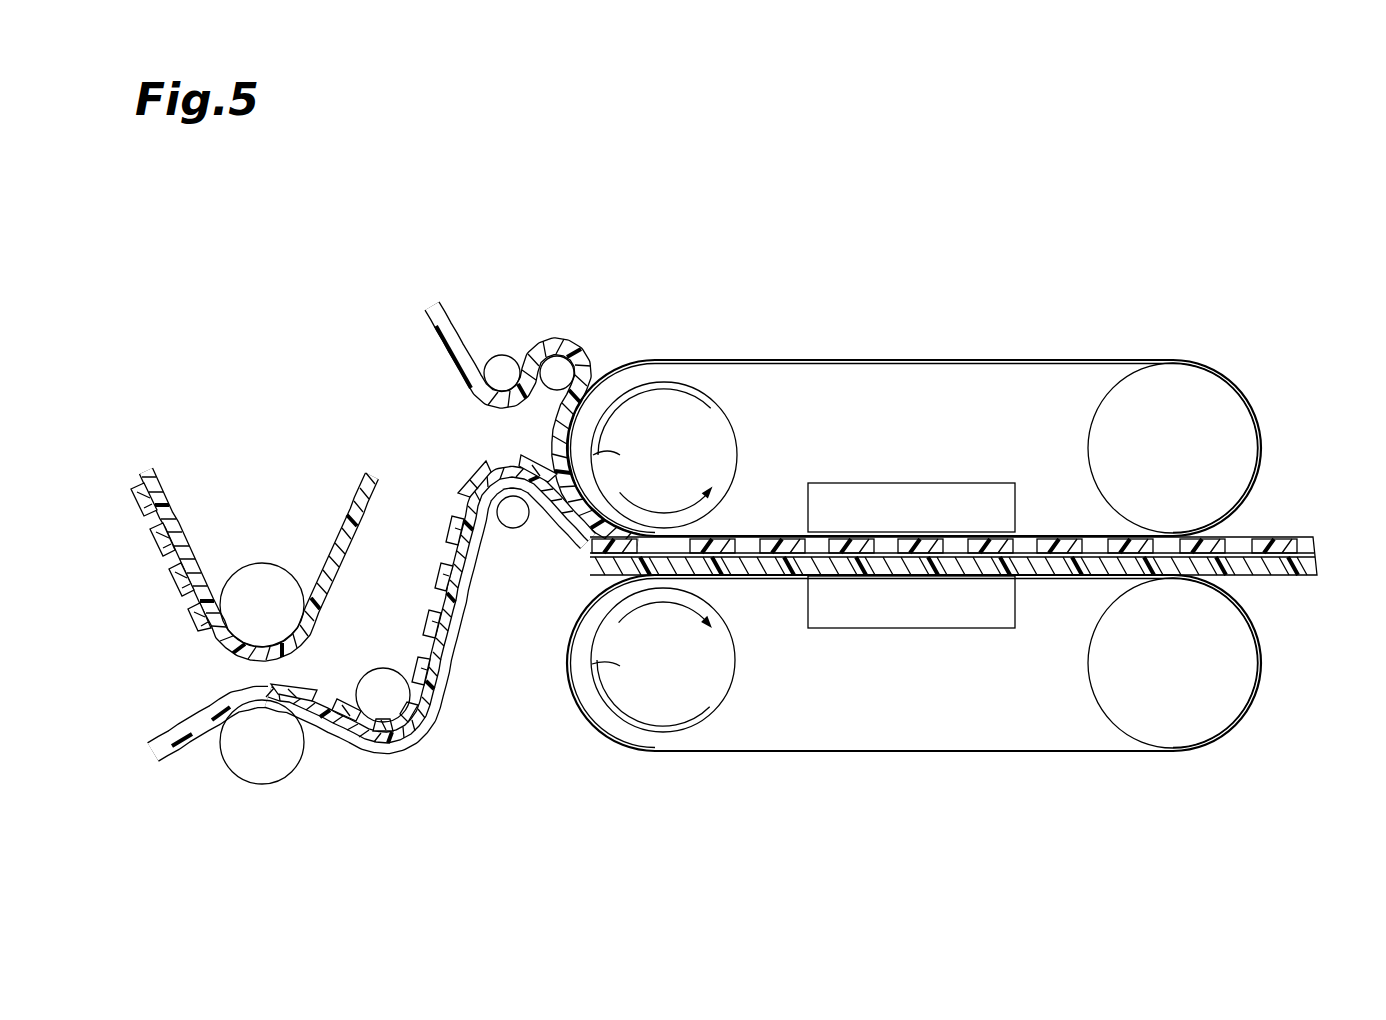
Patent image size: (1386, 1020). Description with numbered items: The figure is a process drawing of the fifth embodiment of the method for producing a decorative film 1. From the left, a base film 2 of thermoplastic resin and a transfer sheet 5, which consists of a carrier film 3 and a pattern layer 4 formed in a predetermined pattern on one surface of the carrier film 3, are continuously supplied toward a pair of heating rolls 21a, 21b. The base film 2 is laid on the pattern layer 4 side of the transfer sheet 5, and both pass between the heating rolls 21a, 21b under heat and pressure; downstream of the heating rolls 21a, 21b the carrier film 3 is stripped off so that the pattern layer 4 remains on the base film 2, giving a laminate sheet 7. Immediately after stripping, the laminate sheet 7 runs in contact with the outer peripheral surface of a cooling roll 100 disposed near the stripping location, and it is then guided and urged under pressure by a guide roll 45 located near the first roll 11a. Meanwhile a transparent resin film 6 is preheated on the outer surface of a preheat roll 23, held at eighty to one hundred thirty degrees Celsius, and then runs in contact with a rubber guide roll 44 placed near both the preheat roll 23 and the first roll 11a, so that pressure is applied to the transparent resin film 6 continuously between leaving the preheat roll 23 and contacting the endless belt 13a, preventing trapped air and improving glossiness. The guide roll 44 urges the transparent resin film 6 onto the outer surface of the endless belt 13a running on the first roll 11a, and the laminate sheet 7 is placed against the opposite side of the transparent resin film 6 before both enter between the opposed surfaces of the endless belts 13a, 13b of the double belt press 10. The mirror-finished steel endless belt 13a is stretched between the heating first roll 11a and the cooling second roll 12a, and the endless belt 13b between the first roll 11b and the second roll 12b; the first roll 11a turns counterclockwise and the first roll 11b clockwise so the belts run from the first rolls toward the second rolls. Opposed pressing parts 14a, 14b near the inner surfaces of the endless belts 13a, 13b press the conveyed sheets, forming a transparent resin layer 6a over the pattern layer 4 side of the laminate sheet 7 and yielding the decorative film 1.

The decorative film 1 is at (1317, 531).
The base film 2 is at (180, 747).
The carrier film 3 is at (161, 497).
The pattern layer 4 is at (157, 578).
The transfer sheet 5 is at (244, 539).
The transparent resin film 6 is at (439, 313).
The transparent resin layer 6a is at (1319, 549).
The laminate sheet 7 is at (330, 759).
The double belt press 10 is at (913, 520).
The first roll 11a is at (650, 372).
The first roll 11b is at (650, 749).
The second roll 12a is at (1176, 368).
The second roll 12b is at (1175, 749).
The endless belt 13a is at (910, 359).
The endless belt 13b is at (937, 752).
The pressing part 14a is at (912, 483).
The pressing part 14b is at (912, 628).
The heating roll 21a is at (262, 570).
The heating roll 21b is at (262, 786).
The preheat roll 23 is at (503, 357).
The guide roll 44 is at (560, 357).
The guide roll 45 is at (514, 529).
The cooling roll 100 is at (381, 679).